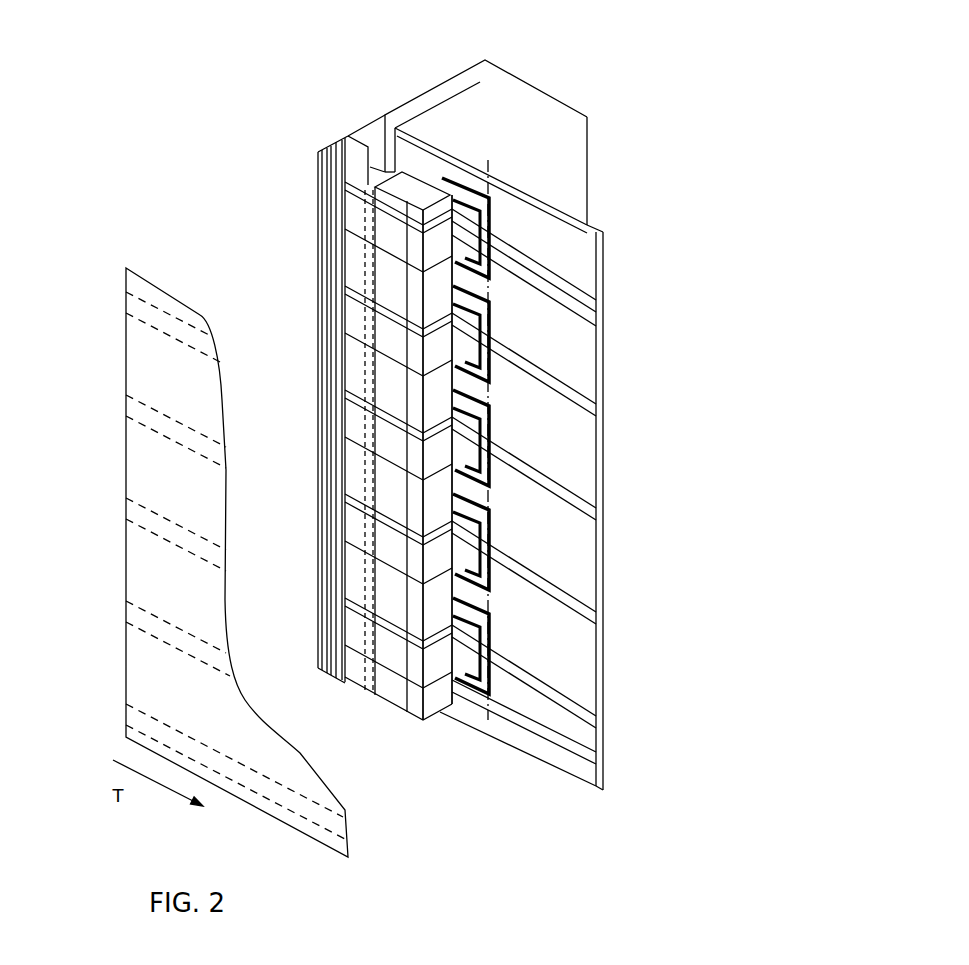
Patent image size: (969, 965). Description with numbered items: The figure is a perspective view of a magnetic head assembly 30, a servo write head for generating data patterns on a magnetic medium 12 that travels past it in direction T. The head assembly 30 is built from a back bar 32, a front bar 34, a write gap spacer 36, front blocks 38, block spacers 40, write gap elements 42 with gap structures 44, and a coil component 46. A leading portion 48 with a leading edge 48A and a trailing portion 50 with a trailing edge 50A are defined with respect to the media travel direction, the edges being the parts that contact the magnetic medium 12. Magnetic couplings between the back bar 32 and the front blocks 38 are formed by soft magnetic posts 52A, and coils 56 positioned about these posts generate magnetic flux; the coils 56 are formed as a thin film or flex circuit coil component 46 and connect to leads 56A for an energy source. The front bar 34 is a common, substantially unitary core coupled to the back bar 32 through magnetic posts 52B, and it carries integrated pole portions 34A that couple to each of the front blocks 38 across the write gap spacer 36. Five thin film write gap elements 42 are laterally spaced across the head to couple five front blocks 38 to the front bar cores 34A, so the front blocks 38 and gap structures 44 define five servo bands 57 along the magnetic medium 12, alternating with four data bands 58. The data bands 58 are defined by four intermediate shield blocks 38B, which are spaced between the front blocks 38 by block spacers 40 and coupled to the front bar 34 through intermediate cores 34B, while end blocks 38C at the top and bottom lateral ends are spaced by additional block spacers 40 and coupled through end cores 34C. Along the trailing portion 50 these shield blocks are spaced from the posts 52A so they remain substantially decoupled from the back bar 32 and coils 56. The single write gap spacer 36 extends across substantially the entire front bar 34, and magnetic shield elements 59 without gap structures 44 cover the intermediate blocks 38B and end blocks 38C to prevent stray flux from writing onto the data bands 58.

The magnetic medium 12 is at (178, 388).
The magnetic head assembly 30 is at (203, 57).
The back bar 32 is at (580, 164).
The front bar 34 is at (298, 329).
The front bar pole portion 34A is at (348, 223).
The intermediate core 34B is at (360, 271).
The end core 34C is at (362, 167).
The write gap spacer 36 is at (338, 201).
The front block 38 is at (413, 673).
The intermediate block 38B is at (512, 601).
The end block 38C is at (416, 187).
The block spacer 40 is at (472, 268).
The write gap element 42 is at (426, 446).
The gap structure 44 is at (406, 427).
The coil component 46 is at (627, 497).
The leading portion 48 is at (398, 86).
The leading edge 48A is at (377, 113).
The trailing portion 50 is at (612, 98).
The trailing edge 50A is at (494, 162).
The magnetic post 52A is at (462, 665).
The magnetic post 52B is at (383, 144).
The coil 56 is at (593, 331).
The lead 56A is at (606, 300).
The servo band 57 is at (162, 637).
The data band 58 is at (186, 483).
The magnetic shield element 59 is at (330, 166).